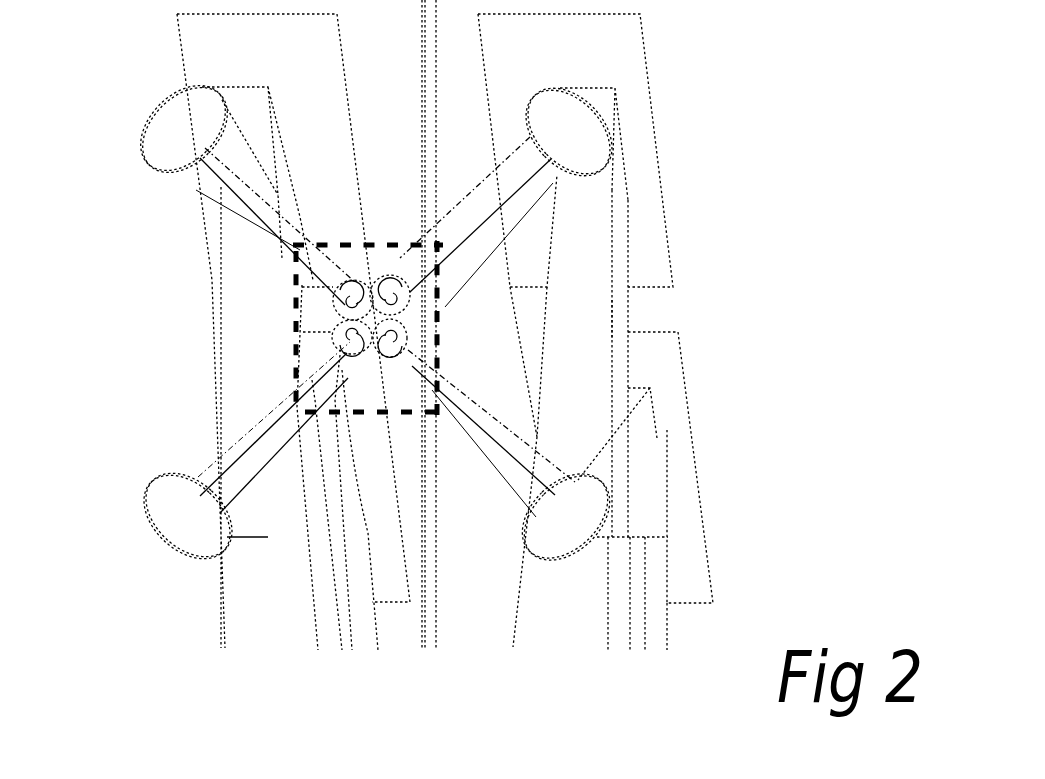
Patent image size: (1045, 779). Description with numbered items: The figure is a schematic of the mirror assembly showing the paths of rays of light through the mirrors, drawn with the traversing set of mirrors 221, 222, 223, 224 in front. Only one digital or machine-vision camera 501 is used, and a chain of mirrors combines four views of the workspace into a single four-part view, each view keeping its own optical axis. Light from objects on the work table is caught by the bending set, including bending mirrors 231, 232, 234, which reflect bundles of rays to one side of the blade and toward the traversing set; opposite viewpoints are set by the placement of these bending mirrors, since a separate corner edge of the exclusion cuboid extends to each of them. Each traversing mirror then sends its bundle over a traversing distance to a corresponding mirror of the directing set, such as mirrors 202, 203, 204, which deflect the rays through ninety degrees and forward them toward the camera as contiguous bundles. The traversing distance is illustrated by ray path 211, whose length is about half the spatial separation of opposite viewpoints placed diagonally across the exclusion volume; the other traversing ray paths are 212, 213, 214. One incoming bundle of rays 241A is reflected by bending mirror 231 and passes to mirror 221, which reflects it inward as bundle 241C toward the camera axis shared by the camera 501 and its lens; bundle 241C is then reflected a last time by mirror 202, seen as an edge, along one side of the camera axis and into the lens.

The directing set mirror 202 is at (415, 338).
The directing set mirror 203 is at (352, 333).
The directing set mirror 204 is at (352, 305).
The ray path 211 is at (467, 212).
The traversing ray path 212 is at (500, 462).
The traversing ray path 213 is at (218, 440).
The traversing ray path 214 is at (200, 193).
The traversing set mirror 221 is at (583, 128).
The traversing set mirror 222 is at (600, 510).
The traversing set mirror 223 is at (170, 507).
The traversing set mirror 224 is at (190, 118).
The bending mirror 231 is at (650, 75).
The bending mirror 232 is at (685, 368).
The bending mirror 234 is at (183, 50).
The incoming bundle of rays 241A is at (582, 308).
The bundle of rays 241C is at (425, 300).
The camera 501 is at (378, 241).